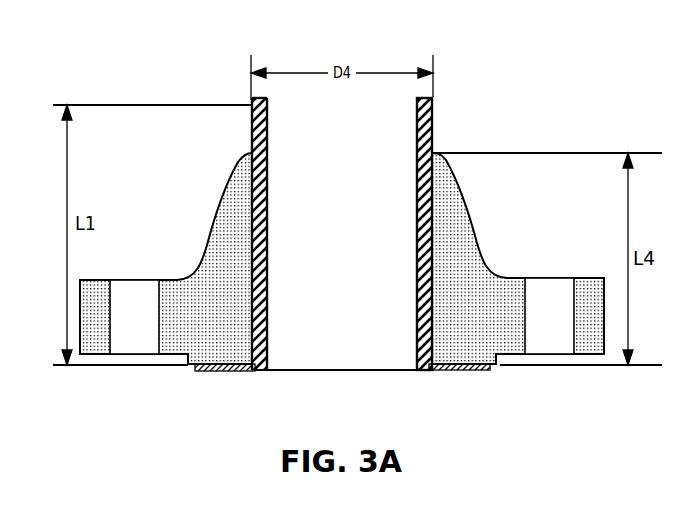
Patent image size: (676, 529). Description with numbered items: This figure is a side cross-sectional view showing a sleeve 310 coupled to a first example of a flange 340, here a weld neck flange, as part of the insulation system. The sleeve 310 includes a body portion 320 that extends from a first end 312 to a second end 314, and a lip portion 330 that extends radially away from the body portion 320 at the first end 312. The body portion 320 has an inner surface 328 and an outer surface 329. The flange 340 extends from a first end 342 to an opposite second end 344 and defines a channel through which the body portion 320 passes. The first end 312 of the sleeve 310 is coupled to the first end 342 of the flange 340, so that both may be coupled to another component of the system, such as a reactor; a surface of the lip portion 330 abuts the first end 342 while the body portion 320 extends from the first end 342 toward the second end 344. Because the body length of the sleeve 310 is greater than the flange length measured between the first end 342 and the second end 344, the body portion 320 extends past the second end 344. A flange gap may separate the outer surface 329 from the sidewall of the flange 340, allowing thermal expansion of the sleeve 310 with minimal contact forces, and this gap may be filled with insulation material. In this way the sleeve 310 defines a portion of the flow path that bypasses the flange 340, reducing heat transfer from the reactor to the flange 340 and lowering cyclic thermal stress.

The sleeve 310 is at (243, 370).
The first end 312 is at (444, 415).
The second end 314 is at (354, 194).
The body portion 320 is at (432, 126).
The inner surface 328 is at (267, 143).
The outer surface 329 is at (251, 137).
The lip portion 330 is at (205, 373).
The flange 340 is at (220, 207).
The first end 342 is at (492, 366).
The second end 344 is at (433, 155).